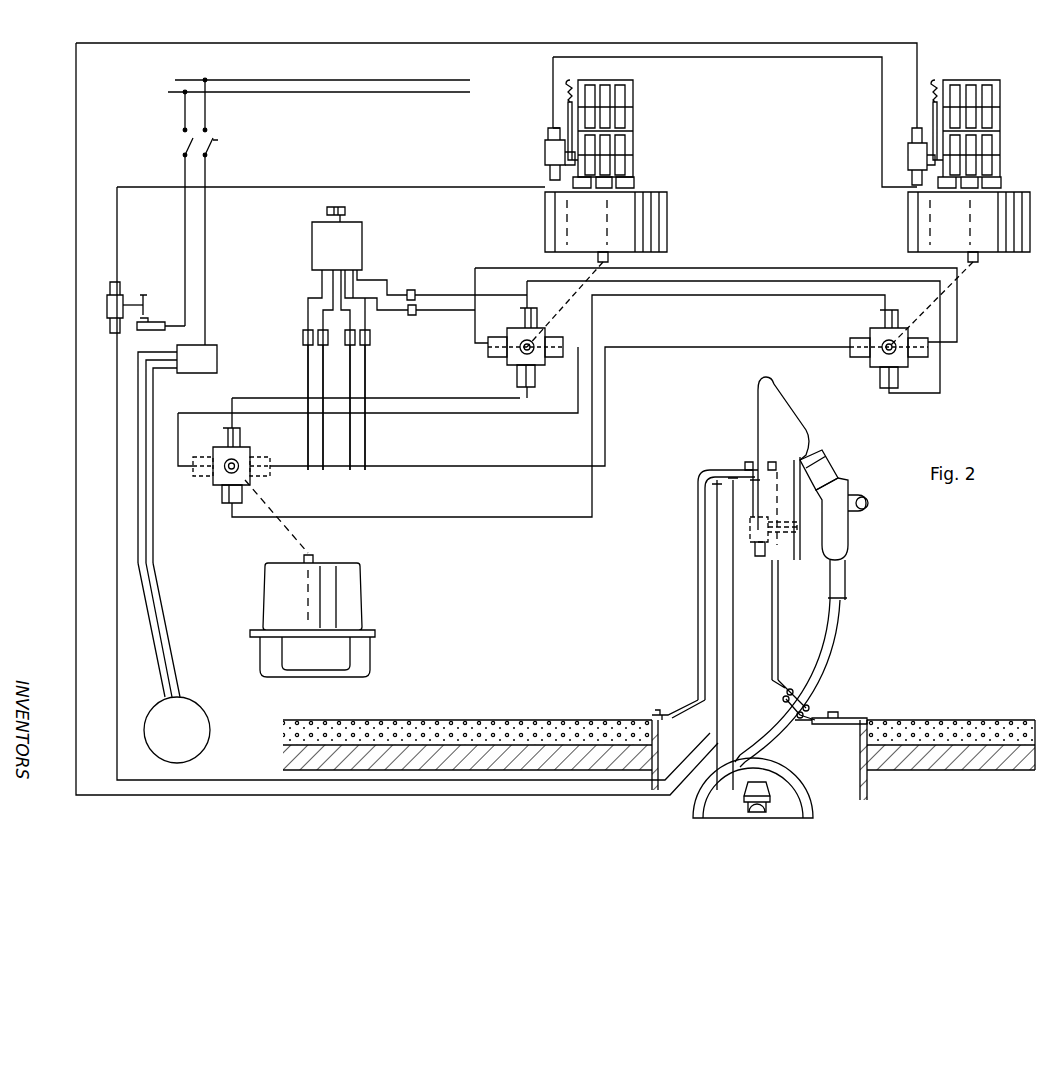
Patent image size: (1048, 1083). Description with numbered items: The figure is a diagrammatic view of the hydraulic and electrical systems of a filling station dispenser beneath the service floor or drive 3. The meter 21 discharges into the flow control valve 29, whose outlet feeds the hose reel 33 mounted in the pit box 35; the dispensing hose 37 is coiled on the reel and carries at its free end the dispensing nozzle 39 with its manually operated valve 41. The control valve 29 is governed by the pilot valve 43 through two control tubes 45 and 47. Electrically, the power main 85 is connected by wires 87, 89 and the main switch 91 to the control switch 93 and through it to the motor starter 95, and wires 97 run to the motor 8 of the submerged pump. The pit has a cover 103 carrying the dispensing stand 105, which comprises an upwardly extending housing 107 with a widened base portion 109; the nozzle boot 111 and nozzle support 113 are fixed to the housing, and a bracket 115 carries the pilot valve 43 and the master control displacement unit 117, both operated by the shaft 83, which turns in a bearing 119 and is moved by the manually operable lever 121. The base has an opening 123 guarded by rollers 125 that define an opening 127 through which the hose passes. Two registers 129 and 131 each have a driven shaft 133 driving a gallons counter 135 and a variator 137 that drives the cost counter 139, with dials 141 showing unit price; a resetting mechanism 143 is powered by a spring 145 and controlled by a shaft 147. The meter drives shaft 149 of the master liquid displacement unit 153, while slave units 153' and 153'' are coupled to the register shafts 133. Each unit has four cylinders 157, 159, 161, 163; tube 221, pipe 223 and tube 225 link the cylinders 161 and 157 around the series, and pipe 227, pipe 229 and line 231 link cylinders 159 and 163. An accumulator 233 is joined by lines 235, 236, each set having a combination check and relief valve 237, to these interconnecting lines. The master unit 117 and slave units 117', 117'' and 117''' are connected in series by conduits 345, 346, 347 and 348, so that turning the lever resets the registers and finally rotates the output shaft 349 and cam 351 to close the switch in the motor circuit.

The service floor or drive 3 is at (930, 720).
The motor 8 is at (200, 712).
The meter 21 is at (350, 590).
The flow control valve 29 is at (772, 805).
The hose reel 33 is at (780, 778).
The pit box 35 is at (867, 786).
The dispensing hose 37 is at (755, 760).
The dispensing nozzle 39 is at (820, 456).
The manually operated valve 41 is at (842, 493).
The pilot valve 43 is at (748, 520).
The control tube 45 is at (717, 562).
The control tube 47 is at (733, 580).
The shaft 83 is at (783, 508).
The power main 85 is at (412, 82).
The wire 87 is at (185, 108).
The wire 89 is at (205, 108).
The main switch 91 is at (218, 140).
The control switch 93 is at (150, 330).
The motor starter 95 is at (207, 345).
The wires 97 is at (160, 606).
The cover 103 is at (852, 718).
The dispensing stand 105 is at (696, 500).
The housing 107 is at (703, 525).
The base portion 109 is at (682, 710).
The nozzle boot 111 is at (758, 383).
The nozzle support 113 is at (836, 615).
The bracket 115 is at (752, 492).
The master control displacement unit 117 is at (709, 550).
The slave unit 117' is at (136, 283).
The slave unit 117'' is at (527, 154).
The slave unit 117''' is at (880, 156).
The bearing 119 is at (778, 610).
The manually operable lever 121 is at (828, 485).
The opening 123 is at (800, 718).
The rollers 125 is at (788, 688).
The opening 127 is at (800, 700).
The register 129 is at (633, 82).
The register 131 is at (985, 80).
The driven shaft 133 is at (610, 258).
The gallons counter 135 is at (618, 142).
The change speed gearing mechanism 137 is at (650, 204).
The cost counter 139 is at (618, 100).
The dials 141 is at (630, 180).
The resetting mechanism 143 is at (566, 112).
The spring 145 is at (566, 95).
The shaft 147 is at (565, 152).
The shaft 149 is at (308, 530).
The master liquid displacement unit 153 is at (260, 456).
The slave unit 153' is at (498, 364).
The slave unit 153'' is at (686, 341).
The cylinder 157 is at (270, 462).
The cylinder 159 is at (240, 436).
The cylinder 161 is at (202, 457).
The cylinder 163 is at (222, 496).
The tube 221 is at (200, 413).
The pipe 223 is at (475, 330).
The tube 225 is at (342, 466).
The pipe 227 is at (250, 398).
The pipe 229 is at (575, 281).
The line 231 is at (265, 517).
The accumulator 233 is at (352, 232).
The lines 235 is at (352, 284).
The lines 236 is at (364, 360).
The combination check and relief valve 237 is at (418, 308).
The conduit 345 is at (117, 412).
The conduit 346 is at (370, 187).
The conduit 347 is at (825, 57).
The conduit 348 is at (800, 50).
The output shaft 349 is at (135, 303).
The cam 351 is at (146, 300).